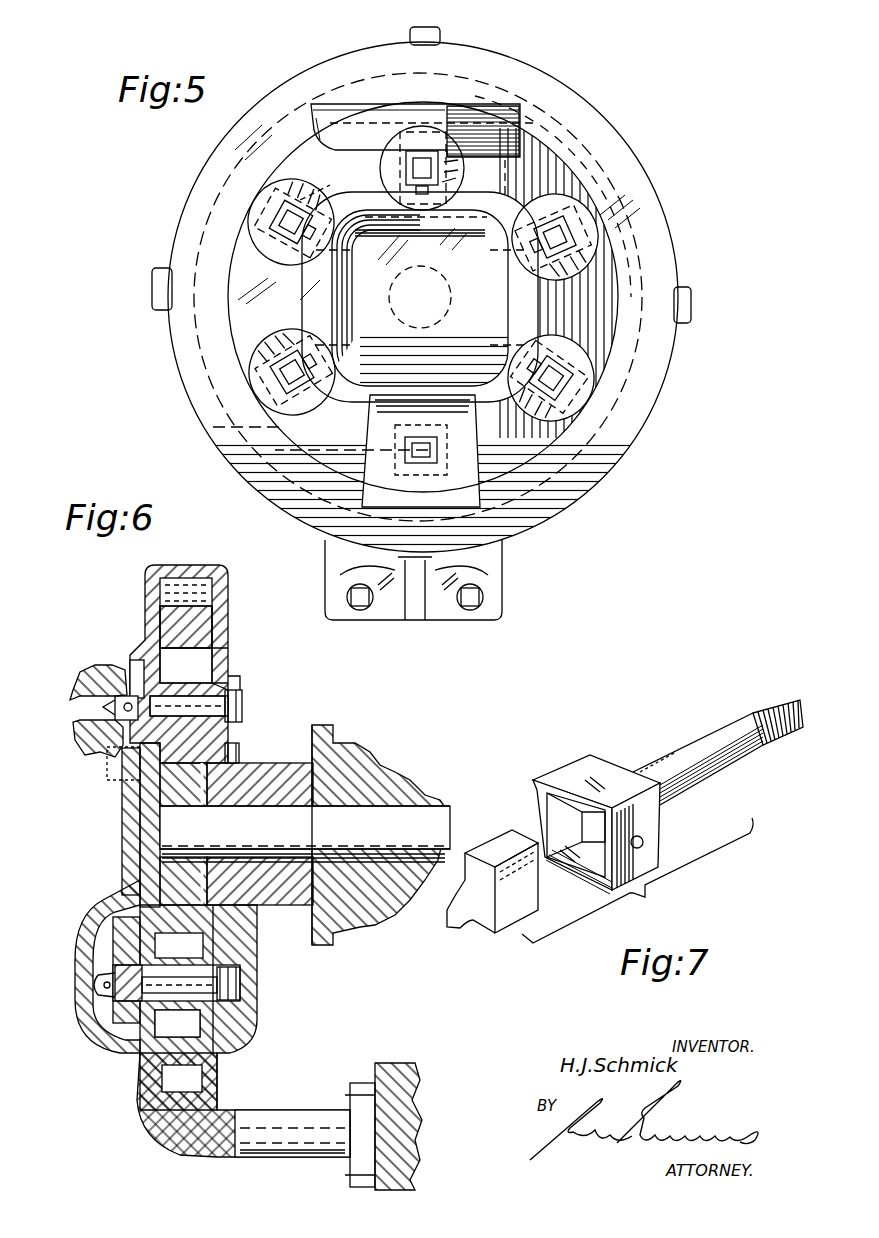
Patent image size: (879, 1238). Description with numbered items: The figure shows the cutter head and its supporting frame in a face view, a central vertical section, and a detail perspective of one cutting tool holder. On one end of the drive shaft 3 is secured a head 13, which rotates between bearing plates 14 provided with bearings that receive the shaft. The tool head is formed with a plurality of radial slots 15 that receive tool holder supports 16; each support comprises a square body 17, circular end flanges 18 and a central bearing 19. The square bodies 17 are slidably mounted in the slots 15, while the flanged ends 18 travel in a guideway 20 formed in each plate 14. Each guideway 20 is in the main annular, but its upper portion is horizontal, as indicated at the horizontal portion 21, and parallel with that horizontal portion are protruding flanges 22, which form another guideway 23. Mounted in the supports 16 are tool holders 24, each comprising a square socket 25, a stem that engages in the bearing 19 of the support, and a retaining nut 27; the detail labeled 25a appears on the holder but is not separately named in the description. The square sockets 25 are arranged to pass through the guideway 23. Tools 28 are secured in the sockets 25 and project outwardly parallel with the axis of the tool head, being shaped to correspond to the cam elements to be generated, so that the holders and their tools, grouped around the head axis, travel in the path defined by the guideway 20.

In FIG. 5, the drive shaft 3 is at (460, 306).
In FIG. 6, the drive shaft 3 is at (370, 827).
In FIG. 5, the head 13 is at (325, 455).
In FIG. 6, the head 13 is at (212, 750).
In FIG. 5, the bearing plates 14 is at (550, 493).
In FIG. 6, the bearing plates 14 is at (228, 643).
In FIG. 5, the radial slots 15 is at (335, 390).
In FIG. 6, the radial slots 15 is at (193, 1020).
In FIG. 5, the tool holder supports 16 is at (577, 368).
In FIG. 6, the tool holder supports 16 is at (228, 690).
In FIG. 6, the square body 17 is at (137, 1050).
In FIG. 6, the circular end flanges 18 is at (217, 950).
In FIG. 6, the central bearing 19 is at (245, 703).
In FIG. 5, the guideway 20 is at (510, 447).
In FIG. 5, the horizontal portion 21 is at (570, 130).
In FIG. 6, the horizontal portion 21 is at (177, 628).
In FIG. 5, the protruding flanges 22 is at (518, 128).
In FIG. 6, the protruding flanges 22 is at (123, 727).
In FIG. 5, the guideway 23 is at (367, 150).
In FIG. 6, the guideway 23 is at (127, 747).
In FIG. 6, the tool holders 24 is at (95, 1047).
In FIG. 7, the tool holders 24 is at (711, 752).
In FIG. 6, the square socket 25 is at (102, 962).
In FIG. 7, the square socket 25 is at (563, 768).
In FIG. 7, the pin 25a is at (680, 748).
In FIG. 6, the retaining nut 27 is at (240, 978).
In FIG. 5, the tools 28 is at (385, 170).
In FIG. 6, the tools 28 is at (113, 990).
In FIG. 7, the tools 28 is at (493, 843).